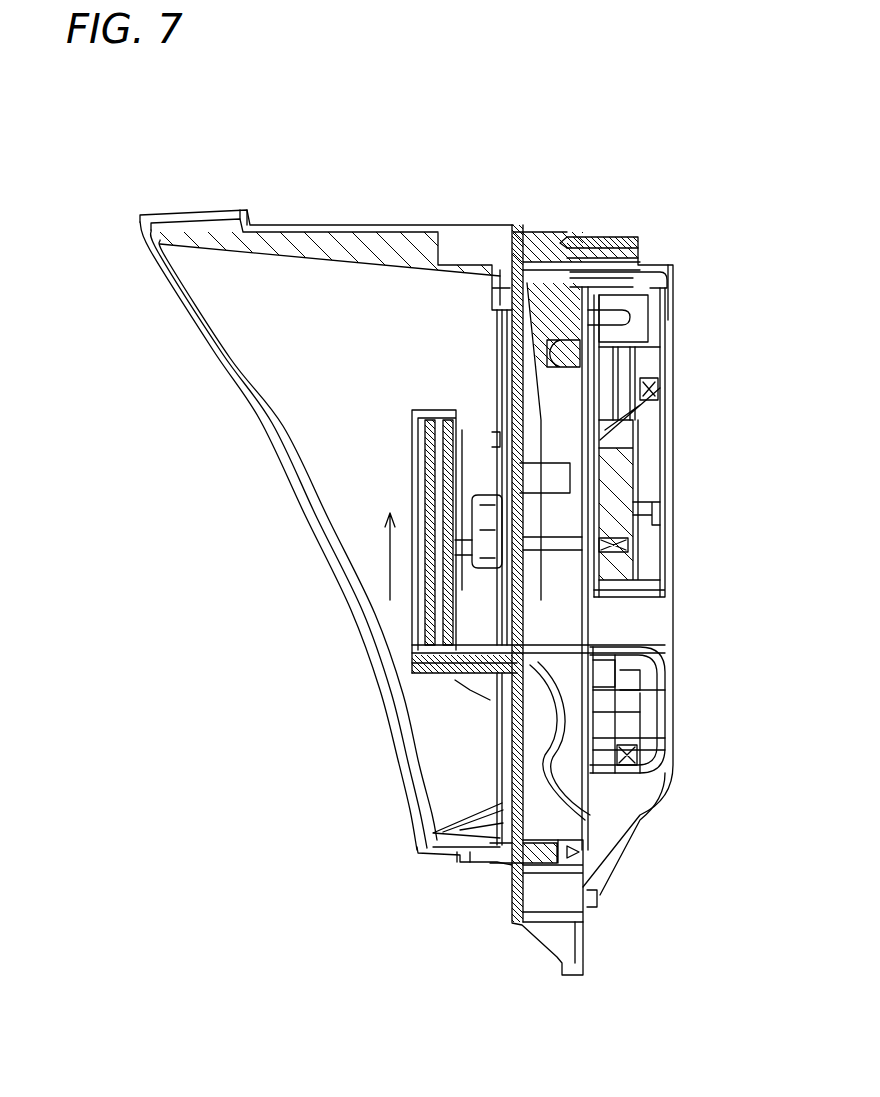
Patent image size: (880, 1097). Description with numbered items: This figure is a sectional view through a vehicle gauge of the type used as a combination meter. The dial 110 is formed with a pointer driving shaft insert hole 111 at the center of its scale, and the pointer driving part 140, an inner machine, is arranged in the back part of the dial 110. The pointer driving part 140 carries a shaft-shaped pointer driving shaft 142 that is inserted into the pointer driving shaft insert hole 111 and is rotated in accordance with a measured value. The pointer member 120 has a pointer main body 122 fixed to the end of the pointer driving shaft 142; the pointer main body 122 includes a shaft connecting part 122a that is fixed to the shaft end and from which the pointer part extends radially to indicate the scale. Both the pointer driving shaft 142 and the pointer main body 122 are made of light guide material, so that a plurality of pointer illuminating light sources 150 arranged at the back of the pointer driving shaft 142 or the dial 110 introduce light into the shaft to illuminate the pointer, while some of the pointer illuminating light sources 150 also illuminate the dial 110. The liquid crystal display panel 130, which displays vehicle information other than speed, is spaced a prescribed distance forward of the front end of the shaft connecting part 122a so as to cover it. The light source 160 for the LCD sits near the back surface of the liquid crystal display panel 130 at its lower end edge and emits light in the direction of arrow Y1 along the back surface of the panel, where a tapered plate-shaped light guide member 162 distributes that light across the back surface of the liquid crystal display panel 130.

The dial 110 is at (510, 343).
The pointer driving shaft insert hole 111 is at (630, 603).
The pointer member 120 is at (487, 493).
The pointer main body 122 is at (412, 440).
The shaft connecting part 122a is at (460, 697).
The liquid crystal display panel 130 is at (412, 467).
The pointer driving part 140 is at (635, 455).
The pointer driving shaft 142 is at (673, 510).
The pointer illuminating light source 150 is at (652, 390).
The light source for the LCD 160 is at (430, 680).
The light guide member 162 is at (412, 627).
The direction of illuminating light output Y1 is at (380, 556).